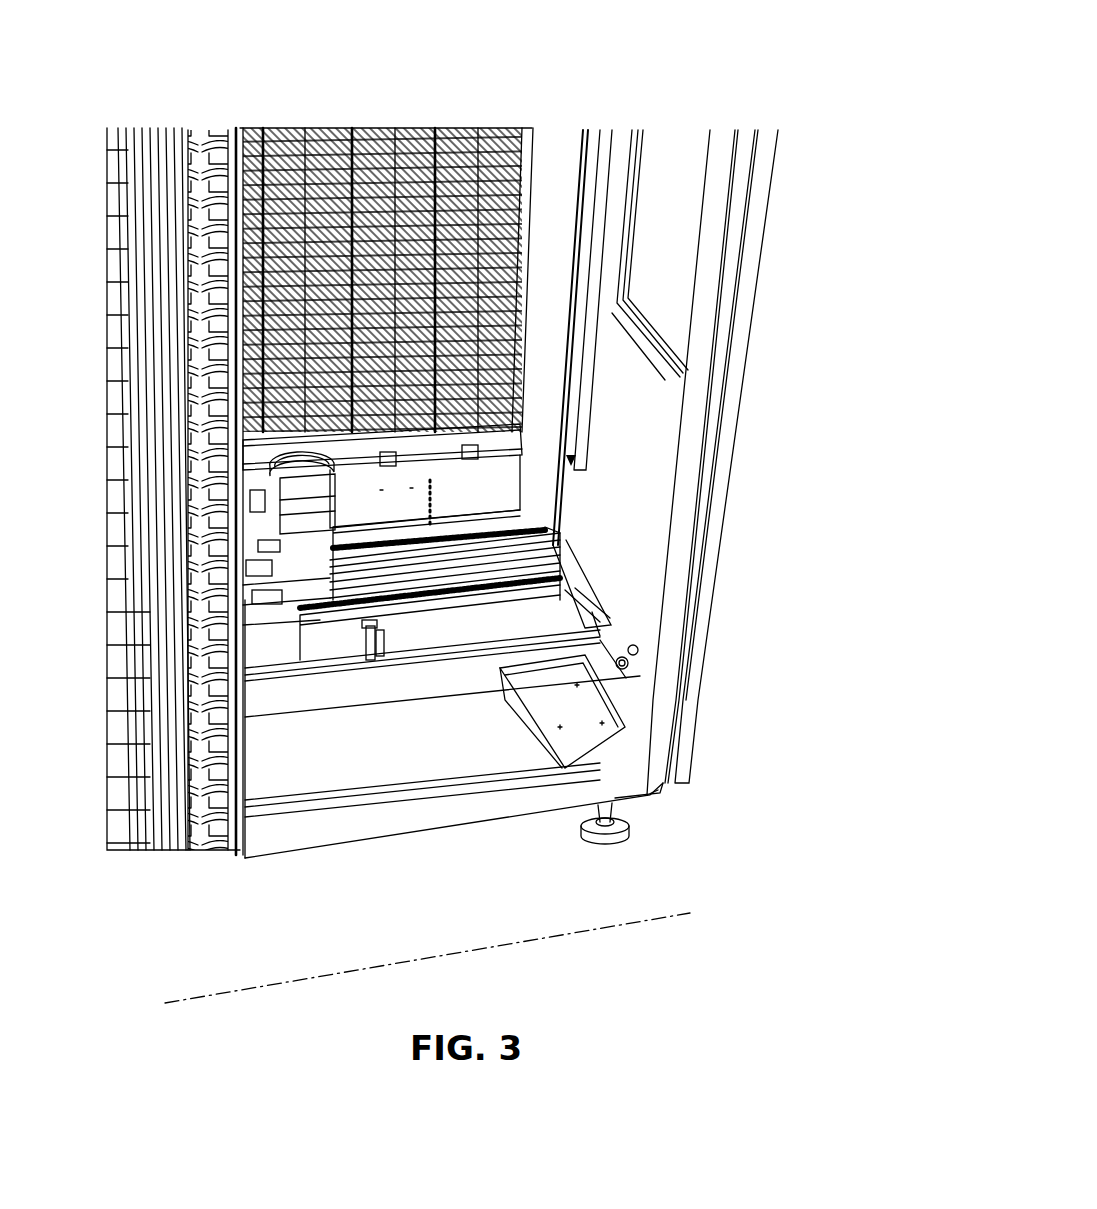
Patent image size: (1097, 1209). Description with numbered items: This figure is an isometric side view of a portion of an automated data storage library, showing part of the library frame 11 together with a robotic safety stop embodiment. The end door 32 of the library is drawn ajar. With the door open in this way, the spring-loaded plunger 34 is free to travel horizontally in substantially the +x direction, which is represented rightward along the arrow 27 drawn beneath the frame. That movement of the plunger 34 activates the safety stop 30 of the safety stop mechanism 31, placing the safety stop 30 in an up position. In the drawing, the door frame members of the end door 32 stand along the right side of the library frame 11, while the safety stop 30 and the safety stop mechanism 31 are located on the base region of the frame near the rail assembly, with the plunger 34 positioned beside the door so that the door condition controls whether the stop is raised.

The library frame 11 is at (741, 69).
The arrow 27 is at (556, 932).
The safety stop 30 is at (366, 658).
The safety stop mechanism 31 is at (441, 642).
The end door 32 is at (733, 358).
The spring-loaded plunger 34 is at (592, 610).